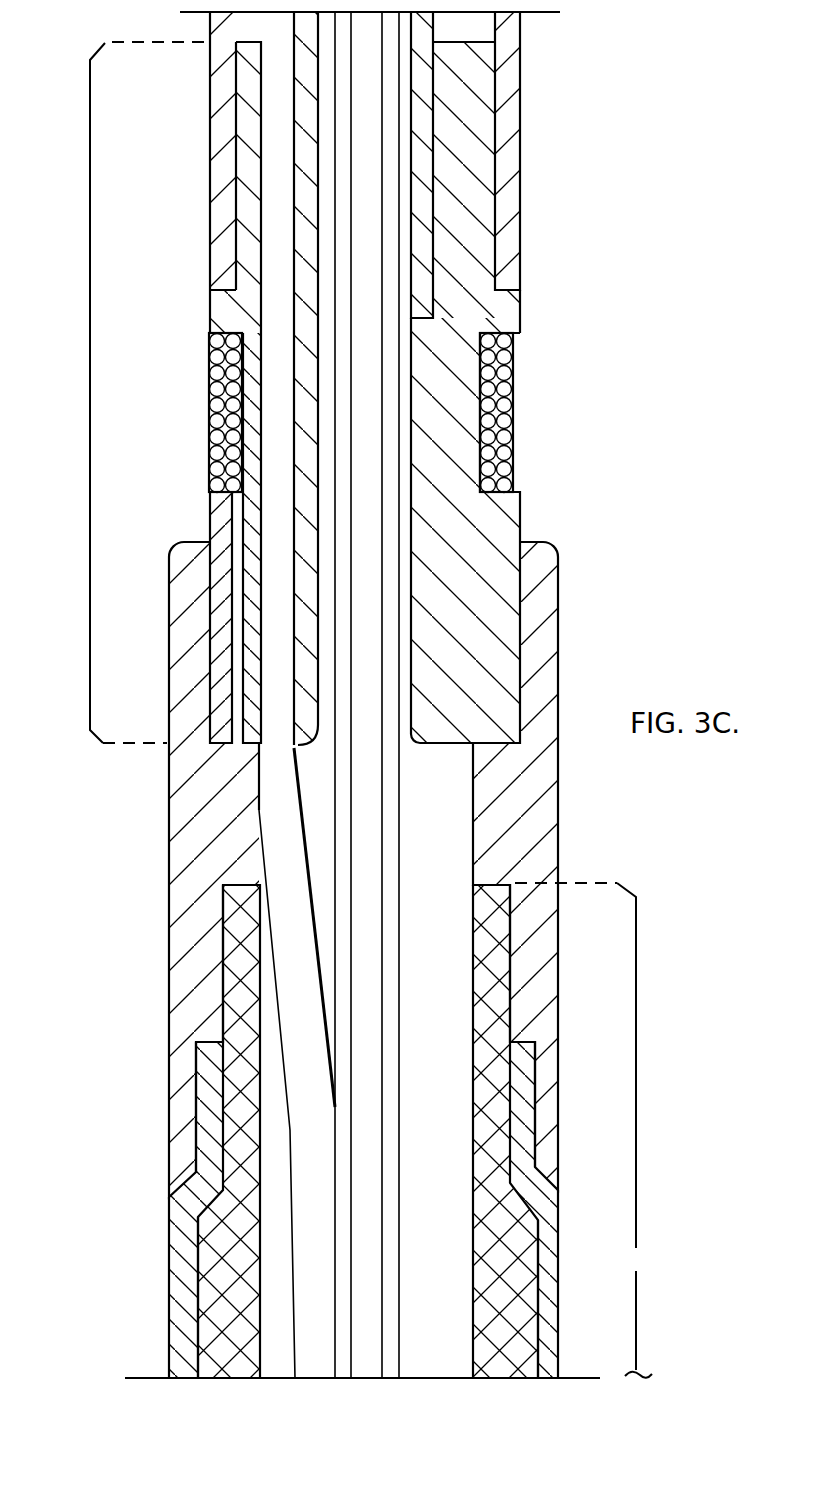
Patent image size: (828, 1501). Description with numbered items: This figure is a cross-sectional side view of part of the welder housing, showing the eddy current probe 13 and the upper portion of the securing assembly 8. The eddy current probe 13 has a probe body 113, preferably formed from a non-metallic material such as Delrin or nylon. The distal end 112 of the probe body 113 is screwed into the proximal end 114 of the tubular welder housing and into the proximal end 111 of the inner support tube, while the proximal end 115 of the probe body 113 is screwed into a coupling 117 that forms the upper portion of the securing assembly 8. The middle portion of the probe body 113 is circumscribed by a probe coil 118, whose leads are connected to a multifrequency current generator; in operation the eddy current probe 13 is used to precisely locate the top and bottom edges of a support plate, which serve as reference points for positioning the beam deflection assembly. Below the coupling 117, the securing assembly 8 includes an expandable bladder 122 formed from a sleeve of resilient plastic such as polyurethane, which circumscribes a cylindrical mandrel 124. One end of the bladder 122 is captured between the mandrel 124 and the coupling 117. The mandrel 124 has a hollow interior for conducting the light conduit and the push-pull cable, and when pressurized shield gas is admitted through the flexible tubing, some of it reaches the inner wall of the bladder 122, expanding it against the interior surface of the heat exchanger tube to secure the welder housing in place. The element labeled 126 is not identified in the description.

The securing assembly 8 is at (636, 1248).
The eddy current probe 13 is at (90, 322).
The proximal end of the inner support tube 111 is at (422, 122).
The distal end of the probe body 112 is at (463, 178).
The probe body 113 is at (461, 418).
The proximal end of the tubular welder housing 114 is at (508, 236).
The proximal end of the probe body 115 is at (487, 640).
The coupling 117 is at (532, 797).
The probe coil 118 is at (210, 395).
The expandable bladder 122 is at (560, 1328).
The cylindrical mandrel 124 is at (540, 1234).
The retainer ring 126 is at (522, 1078).